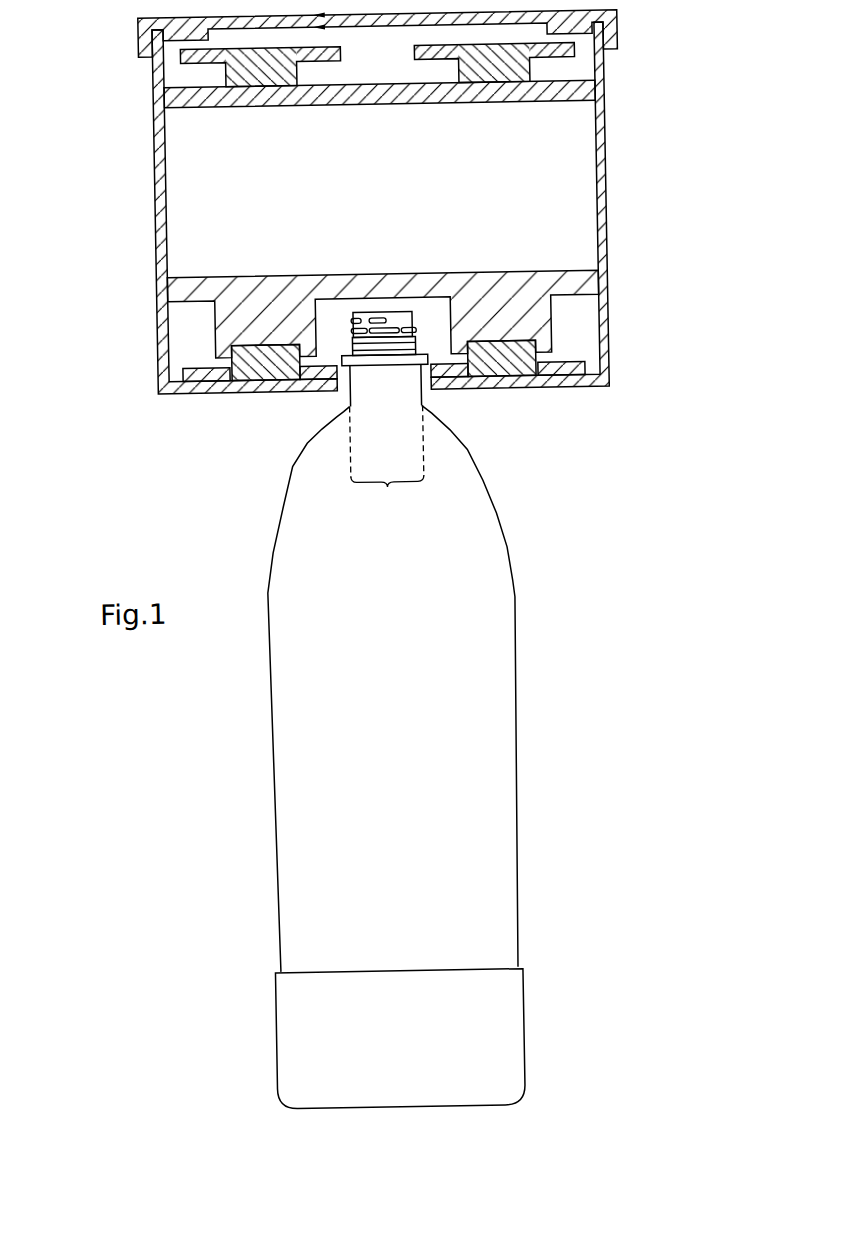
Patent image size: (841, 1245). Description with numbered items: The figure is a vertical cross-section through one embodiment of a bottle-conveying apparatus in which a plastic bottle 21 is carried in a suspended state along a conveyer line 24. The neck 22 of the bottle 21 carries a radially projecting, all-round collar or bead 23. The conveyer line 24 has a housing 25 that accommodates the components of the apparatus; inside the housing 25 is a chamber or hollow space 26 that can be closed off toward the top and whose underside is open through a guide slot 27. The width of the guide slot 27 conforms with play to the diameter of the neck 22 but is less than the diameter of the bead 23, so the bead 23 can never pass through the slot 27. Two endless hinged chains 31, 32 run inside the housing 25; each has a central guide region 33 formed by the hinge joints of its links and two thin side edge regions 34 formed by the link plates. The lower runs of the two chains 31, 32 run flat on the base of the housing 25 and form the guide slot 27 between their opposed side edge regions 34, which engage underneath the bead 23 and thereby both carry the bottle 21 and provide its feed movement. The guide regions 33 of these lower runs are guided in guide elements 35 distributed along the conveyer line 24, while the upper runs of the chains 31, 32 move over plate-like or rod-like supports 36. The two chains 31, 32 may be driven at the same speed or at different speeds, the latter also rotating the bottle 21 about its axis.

The bottle 21 is at (462, 631).
The neck 22 is at (372, 398).
The bead 23 is at (383, 358).
The conveyer line 24 is at (135, 289).
The housing 25 is at (157, 211).
The hollow space 26 is at (417, 304).
The guide slot 27 is at (387, 461).
The hinged chain 31 is at (217, 69).
The hinged chain 32 is at (544, 65).
The guide region 33 is at (253, 356).
The side edge region 34 is at (319, 369).
The guide element 35 is at (238, 300).
The support 36 is at (290, 104).